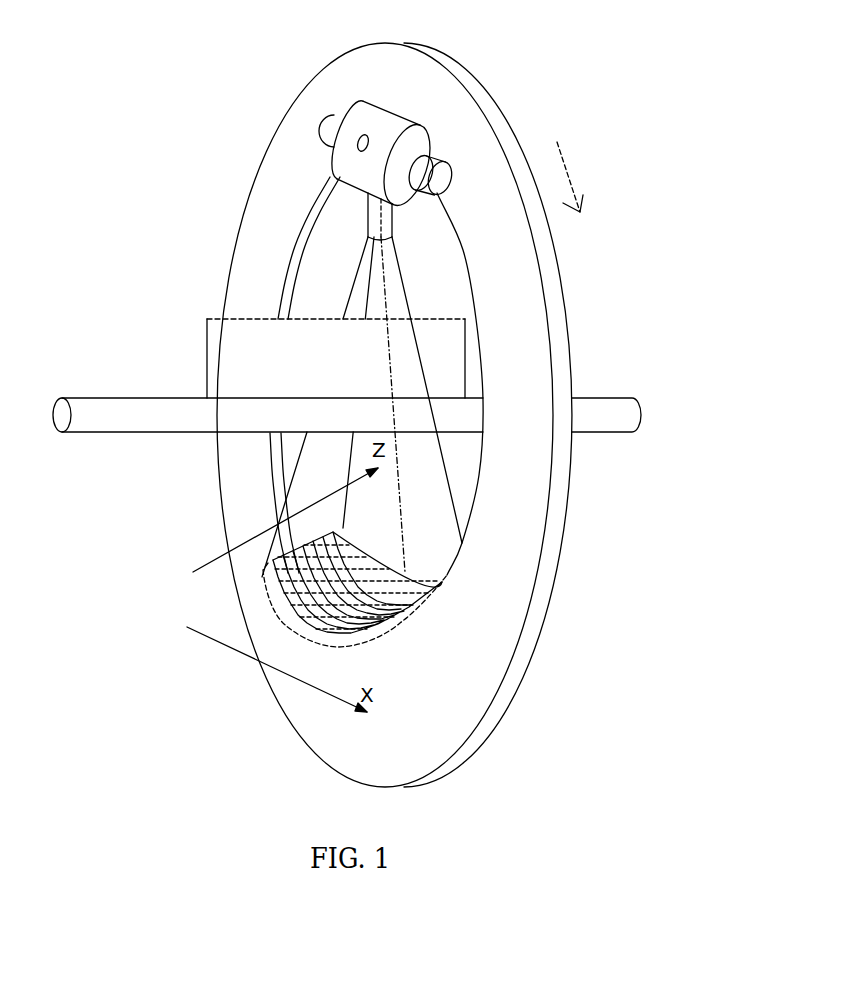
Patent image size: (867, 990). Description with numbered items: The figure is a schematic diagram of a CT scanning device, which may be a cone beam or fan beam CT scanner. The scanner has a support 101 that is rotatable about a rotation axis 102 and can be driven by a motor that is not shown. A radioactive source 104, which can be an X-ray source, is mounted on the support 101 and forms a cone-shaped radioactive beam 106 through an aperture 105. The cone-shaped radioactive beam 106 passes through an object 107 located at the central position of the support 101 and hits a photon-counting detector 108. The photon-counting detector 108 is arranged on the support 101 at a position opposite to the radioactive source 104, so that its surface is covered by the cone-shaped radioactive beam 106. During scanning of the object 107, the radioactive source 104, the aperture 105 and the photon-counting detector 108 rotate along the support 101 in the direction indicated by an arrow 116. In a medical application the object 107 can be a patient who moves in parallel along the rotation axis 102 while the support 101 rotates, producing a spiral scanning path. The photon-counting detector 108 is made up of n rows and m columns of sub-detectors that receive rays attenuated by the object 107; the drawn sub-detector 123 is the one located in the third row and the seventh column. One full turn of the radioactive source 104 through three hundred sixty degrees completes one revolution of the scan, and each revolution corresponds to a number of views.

The support 101 is at (533, 512).
The rotation axis 102 is at (157, 413).
The radioactive source 104 is at (378, 127).
The aperture 105 is at (377, 217).
The cone-shaped radioactive beam 106 is at (400, 300).
The object 107 is at (218, 338).
The photon-counting detector 108 is at (285, 578).
The sub-detector 123 is at (397, 532).
The arrow 116 is at (578, 197).